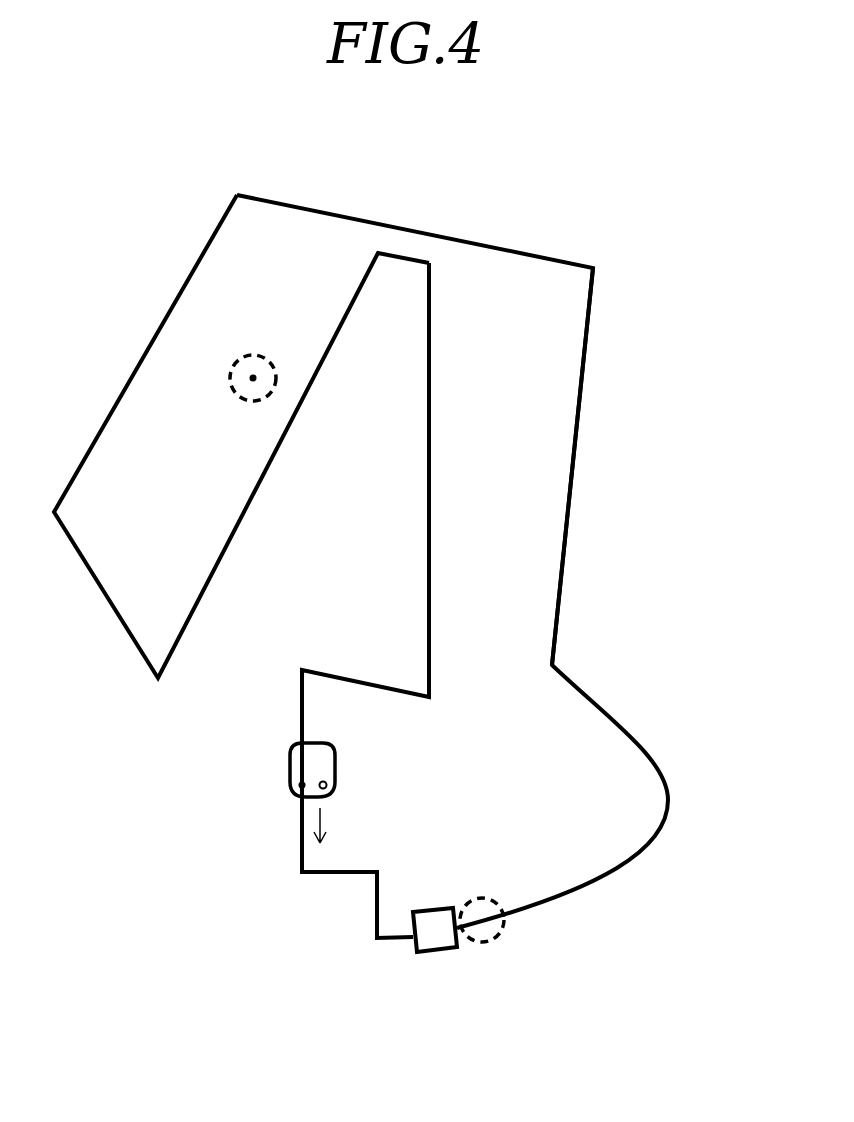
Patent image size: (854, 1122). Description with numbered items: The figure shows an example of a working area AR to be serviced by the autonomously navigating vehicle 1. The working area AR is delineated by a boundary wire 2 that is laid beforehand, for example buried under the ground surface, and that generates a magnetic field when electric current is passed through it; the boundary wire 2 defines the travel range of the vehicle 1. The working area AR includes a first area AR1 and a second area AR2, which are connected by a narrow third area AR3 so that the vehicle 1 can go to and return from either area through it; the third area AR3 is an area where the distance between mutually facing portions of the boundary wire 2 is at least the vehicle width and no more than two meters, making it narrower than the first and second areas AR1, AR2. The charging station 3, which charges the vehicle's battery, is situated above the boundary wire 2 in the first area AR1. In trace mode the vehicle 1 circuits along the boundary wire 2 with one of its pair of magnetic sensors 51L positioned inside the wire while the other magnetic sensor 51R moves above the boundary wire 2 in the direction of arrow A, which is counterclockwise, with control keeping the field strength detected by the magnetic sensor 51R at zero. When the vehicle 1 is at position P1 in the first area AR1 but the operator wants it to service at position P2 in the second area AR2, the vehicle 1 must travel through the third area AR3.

The working area AR is at (533, 282).
The boundary wire 2 is at (573, 465).
The first area AR1 is at (527, 447).
The second area AR2 is at (207, 447).
The third area AR3 is at (407, 248).
The position P2 is at (252, 353).
The position P1 is at (485, 943).
The vehicle 1 is at (292, 763).
The magnetic sensor 51R is at (295, 787).
The magnetic sensor 51L is at (333, 788).
The arrow A is at (321, 840).
The charging station 3 is at (440, 950).